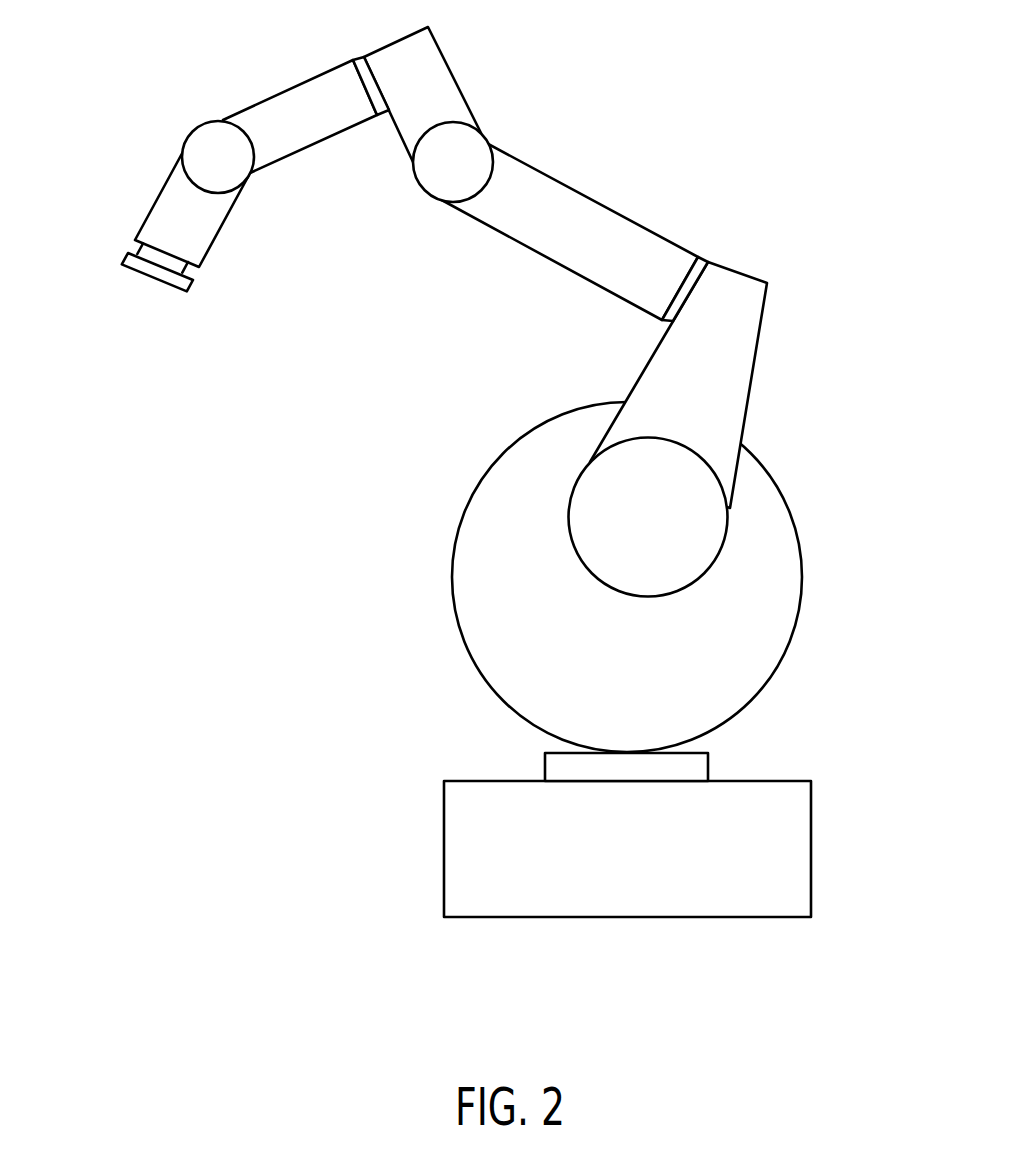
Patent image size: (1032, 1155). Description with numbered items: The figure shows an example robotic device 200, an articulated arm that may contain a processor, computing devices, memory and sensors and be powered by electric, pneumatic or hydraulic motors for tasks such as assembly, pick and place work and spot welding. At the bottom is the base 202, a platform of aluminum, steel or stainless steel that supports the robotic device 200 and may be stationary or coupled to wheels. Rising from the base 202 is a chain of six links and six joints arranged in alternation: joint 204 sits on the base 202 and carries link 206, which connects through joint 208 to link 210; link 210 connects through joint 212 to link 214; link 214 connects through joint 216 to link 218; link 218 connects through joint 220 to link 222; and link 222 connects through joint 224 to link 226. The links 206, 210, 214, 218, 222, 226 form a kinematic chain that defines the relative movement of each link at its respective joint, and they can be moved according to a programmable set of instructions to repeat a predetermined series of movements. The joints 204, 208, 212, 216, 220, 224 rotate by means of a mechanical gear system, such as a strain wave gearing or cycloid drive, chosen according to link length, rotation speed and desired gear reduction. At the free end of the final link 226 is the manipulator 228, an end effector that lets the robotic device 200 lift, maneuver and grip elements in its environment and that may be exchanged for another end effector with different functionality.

The robotic device 200 is at (830, 62).
The base 202 is at (787, 855).
The joint 204 is at (553, 765).
The link 206 is at (773, 623).
The joint 208 is at (583, 548).
The link 210 is at (742, 392).
The joint 212 is at (668, 318).
The link 214 is at (563, 192).
The joint 216 is at (438, 190).
The link 218 is at (433, 73).
The joint 220 is at (357, 60).
The link 222 is at (285, 110).
The joint 224 is at (190, 140).
The link 226 is at (160, 213).
The manipulator 228 is at (135, 265).